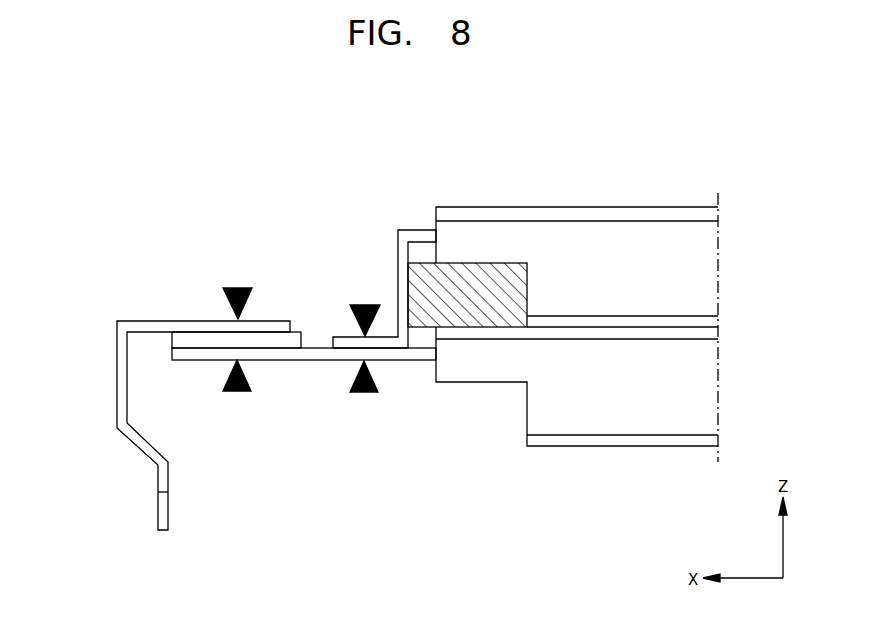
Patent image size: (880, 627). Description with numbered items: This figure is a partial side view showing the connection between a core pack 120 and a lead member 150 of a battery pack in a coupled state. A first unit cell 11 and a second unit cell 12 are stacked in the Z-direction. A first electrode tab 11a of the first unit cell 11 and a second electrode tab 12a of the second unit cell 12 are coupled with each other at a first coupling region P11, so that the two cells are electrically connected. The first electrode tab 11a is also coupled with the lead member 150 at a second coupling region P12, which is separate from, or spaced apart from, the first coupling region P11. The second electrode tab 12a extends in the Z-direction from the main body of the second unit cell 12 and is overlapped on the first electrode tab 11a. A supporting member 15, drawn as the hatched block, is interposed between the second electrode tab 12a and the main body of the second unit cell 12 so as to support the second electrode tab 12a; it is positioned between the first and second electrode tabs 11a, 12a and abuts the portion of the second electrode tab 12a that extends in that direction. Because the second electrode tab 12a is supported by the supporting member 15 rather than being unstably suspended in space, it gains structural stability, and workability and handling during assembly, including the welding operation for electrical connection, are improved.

The lead member 150 is at (118, 303).
The first electrode tab 11a is at (405, 350).
The second electrode tab 12a is at (397, 247).
The supporting member 15 is at (498, 272).
The second unit cell 12 is at (637, 230).
The first unit cell 11 is at (607, 413).
The core pack 120 is at (708, 177).
The second coupling region P12 is at (240, 319).
The first coupling region P11 is at (363, 361).